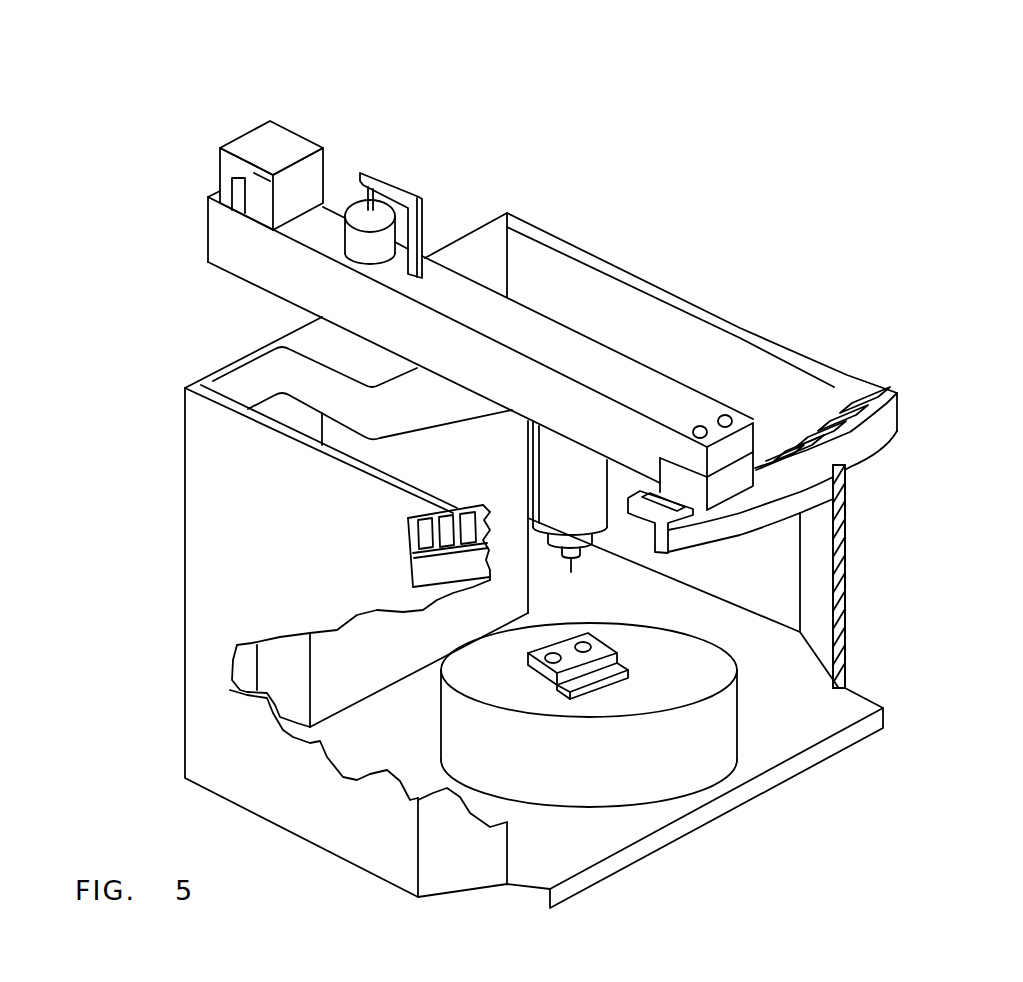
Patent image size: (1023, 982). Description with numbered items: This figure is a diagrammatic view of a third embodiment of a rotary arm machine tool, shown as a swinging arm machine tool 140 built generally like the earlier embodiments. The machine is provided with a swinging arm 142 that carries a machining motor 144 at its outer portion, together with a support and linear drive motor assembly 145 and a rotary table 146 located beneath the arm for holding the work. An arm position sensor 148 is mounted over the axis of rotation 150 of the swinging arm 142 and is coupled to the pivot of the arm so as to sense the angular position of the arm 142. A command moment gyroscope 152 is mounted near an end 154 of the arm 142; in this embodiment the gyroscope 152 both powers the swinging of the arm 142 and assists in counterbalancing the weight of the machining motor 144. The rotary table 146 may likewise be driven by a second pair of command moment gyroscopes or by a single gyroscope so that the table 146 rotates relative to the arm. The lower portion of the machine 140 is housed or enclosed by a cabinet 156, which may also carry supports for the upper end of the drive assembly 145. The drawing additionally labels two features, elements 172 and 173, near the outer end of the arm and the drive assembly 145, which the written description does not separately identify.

The swinging arm machine tool 140 is at (722, 267).
The swinging arm 142 is at (533, 308).
The machining motor 144 is at (593, 498).
The support and linear drive motor assembly 145 is at (895, 390).
The rotary table 146 is at (623, 782).
The arm position sensor 148 is at (343, 245).
The axis of rotation 150 is at (368, 90).
The command moment gyroscope 152 is at (245, 132).
The end of arm 154 is at (210, 213).
The cabinet 156 is at (845, 618).
The clamp 172 is at (727, 487).
The arm end 173 is at (700, 415).